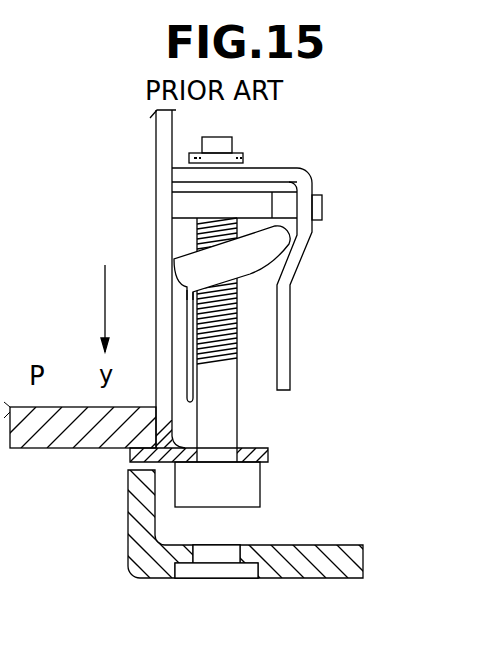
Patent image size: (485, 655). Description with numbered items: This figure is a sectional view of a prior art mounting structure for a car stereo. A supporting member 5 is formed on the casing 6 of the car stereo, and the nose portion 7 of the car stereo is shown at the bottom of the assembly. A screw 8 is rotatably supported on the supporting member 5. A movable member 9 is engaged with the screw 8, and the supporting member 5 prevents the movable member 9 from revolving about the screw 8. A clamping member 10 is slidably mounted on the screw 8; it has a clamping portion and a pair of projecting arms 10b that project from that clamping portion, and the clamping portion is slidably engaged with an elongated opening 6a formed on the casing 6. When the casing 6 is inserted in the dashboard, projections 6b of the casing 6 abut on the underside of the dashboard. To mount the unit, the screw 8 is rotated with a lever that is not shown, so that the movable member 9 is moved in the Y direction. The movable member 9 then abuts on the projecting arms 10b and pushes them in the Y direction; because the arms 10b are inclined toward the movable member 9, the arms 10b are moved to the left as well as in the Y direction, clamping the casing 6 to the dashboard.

The supporting member 5 is at (300, 172).
The casing 6 is at (164, 160).
The elongated opening 6a is at (182, 382).
The projections 6b is at (132, 455).
The nose portion 7 is at (320, 566).
The screw 8 is at (230, 292).
The movable member 9 is at (184, 207).
The clamping member 10 is at (252, 189).
The projecting arms 10b is at (296, 229).